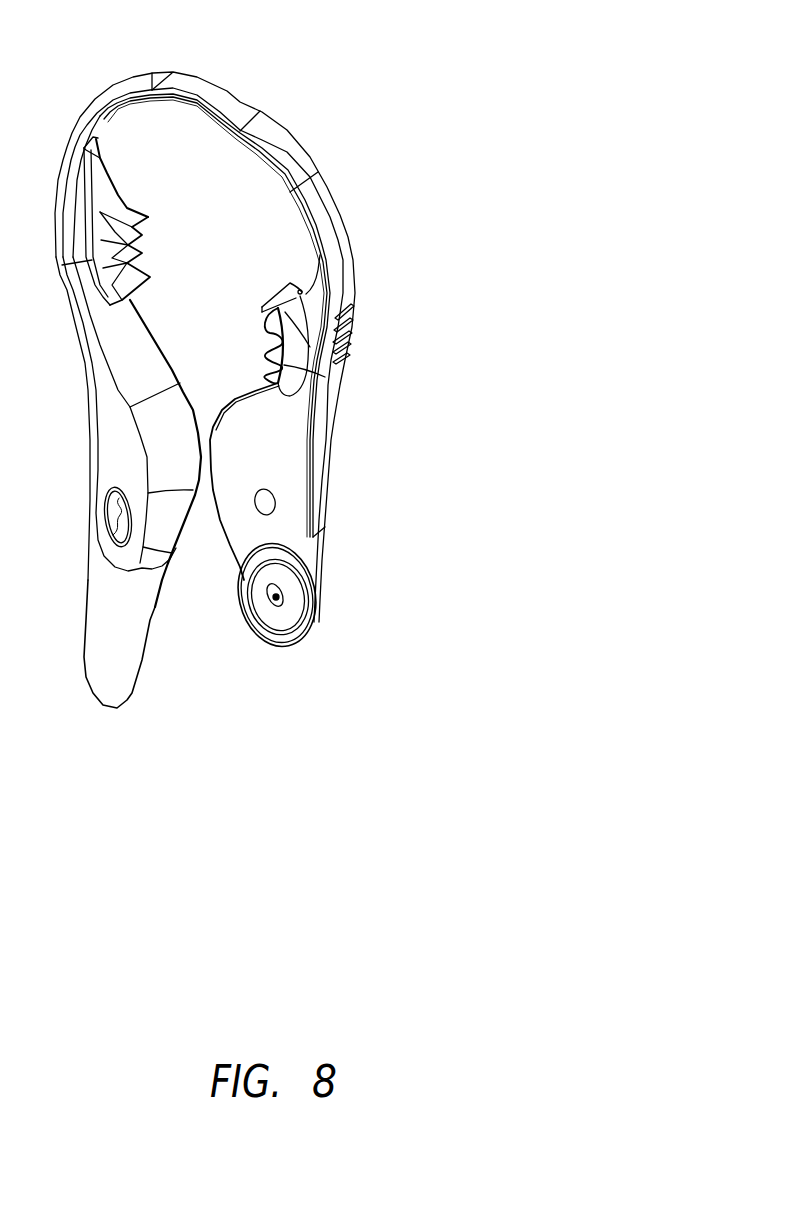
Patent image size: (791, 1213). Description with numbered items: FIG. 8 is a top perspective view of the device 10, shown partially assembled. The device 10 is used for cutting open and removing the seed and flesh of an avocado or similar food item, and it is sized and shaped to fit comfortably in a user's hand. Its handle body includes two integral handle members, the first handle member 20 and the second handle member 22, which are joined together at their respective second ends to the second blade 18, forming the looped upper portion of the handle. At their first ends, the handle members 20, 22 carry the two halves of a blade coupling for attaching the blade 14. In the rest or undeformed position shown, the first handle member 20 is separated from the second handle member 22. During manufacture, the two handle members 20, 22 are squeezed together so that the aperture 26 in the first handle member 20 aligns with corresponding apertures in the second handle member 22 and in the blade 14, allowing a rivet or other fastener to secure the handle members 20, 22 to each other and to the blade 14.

The device 10 is at (378, 98).
The second blade 18 is at (232, 60).
The second handle member 22 is at (118, 430).
The first handle member 20 is at (298, 443).
The blade 14 is at (123, 660).
The aperture 26 is at (270, 598).